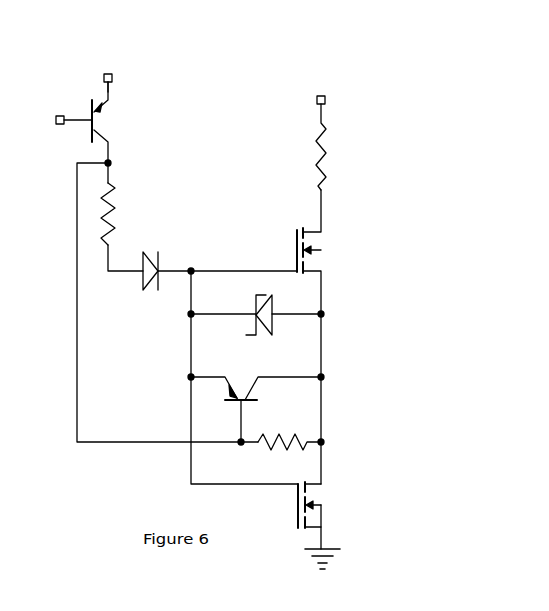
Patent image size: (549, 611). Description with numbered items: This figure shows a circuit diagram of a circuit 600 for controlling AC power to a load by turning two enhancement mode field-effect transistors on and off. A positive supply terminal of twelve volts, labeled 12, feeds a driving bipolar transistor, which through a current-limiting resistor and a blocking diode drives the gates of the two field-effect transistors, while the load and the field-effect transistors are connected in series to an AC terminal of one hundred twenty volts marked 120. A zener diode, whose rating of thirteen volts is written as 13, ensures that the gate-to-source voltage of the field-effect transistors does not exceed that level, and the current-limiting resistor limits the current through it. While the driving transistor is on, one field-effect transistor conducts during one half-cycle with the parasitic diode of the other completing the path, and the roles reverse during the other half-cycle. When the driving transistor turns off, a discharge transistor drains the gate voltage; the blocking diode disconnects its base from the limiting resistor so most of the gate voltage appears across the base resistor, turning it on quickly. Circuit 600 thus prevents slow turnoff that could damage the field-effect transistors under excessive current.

The circuit 600 is at (332, 306).
The +12V supply terminal 12 is at (108, 71).
The 120 VAC supply terminal with load 120 is at (332, 129).
The 13V zener diode D2 13 is at (242, 313).